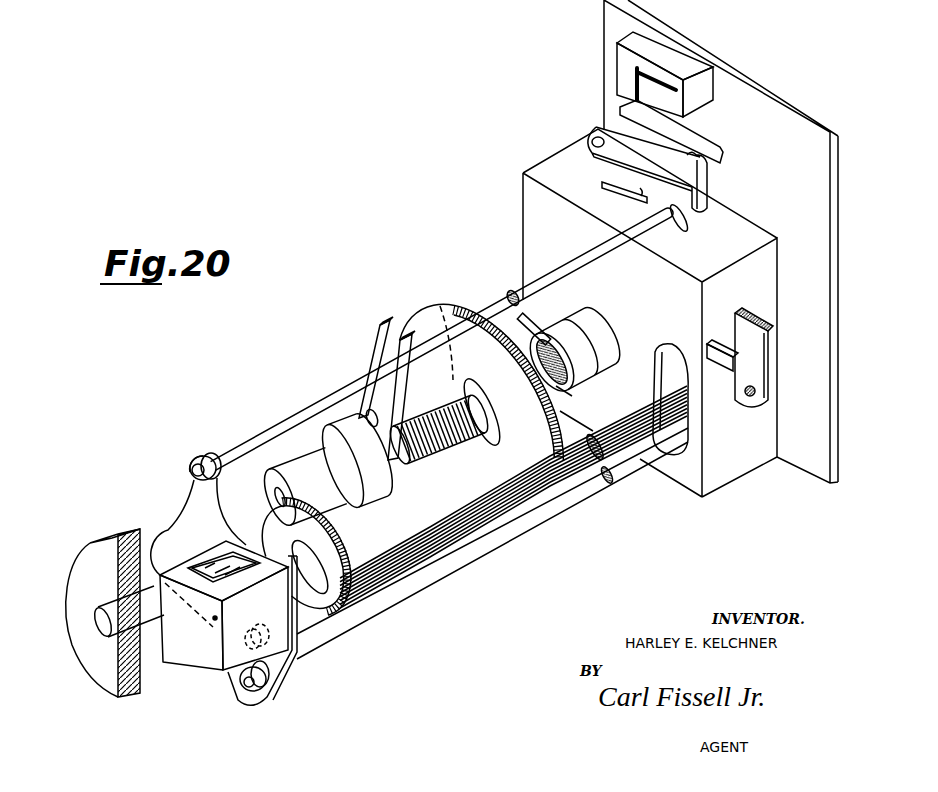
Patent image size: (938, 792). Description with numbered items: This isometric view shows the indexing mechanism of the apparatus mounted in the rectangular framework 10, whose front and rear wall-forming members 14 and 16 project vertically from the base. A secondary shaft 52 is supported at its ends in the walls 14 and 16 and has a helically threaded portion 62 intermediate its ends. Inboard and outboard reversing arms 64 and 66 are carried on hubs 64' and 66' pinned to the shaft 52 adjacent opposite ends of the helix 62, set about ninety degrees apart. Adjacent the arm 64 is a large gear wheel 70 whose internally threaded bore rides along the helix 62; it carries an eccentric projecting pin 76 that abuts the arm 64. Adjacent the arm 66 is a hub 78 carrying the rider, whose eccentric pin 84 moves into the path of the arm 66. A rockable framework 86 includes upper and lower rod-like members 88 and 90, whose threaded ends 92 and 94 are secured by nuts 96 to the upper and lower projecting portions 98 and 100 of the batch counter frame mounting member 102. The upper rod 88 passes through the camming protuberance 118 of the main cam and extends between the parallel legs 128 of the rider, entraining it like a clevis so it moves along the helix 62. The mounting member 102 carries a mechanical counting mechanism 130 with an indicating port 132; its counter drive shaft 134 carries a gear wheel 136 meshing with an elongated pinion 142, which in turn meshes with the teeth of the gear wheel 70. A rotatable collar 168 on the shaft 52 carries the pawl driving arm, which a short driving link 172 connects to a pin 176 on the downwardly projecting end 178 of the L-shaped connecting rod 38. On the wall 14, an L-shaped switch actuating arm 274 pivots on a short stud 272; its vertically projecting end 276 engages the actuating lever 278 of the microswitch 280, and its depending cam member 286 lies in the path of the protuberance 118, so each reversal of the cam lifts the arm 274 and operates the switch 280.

The rectangular framework 10 is at (498, 219).
The front wall-forming member 14 is at (790, 100).
The rear wall-forming member 16 is at (92, 542).
The L-shaped connecting rod 38 is at (758, 318).
The secondary shaft 52 is at (102, 629).
The helically threaded portion 62 is at (446, 447).
The inboard reversing arm 64 is at (551, 312).
The hub 64' is at (586, 399).
The outboard reversing arm 66 is at (302, 453).
The hub 66' is at (345, 486).
The large gear wheel 70 is at (468, 302).
The eccentric projecting pin 76 is at (441, 306).
The hub 78 is at (389, 498).
The eccentric pin 84 is at (372, 418).
The rockable framework 86 is at (182, 456).
The upper rod-like member 88 is at (268, 432).
The lower rod-like member 90 is at (563, 505).
The right-hand threaded end 92 is at (193, 474).
The right-hand threaded end 94 is at (246, 684).
The nuts 96 is at (205, 460).
The upper projecting portion 98 is at (213, 457).
The lower projecting portion 100 is at (276, 698).
The batch counter frame mounting member 102 is at (163, 534).
The camming protuberance 118 is at (687, 221).
The parallel legs 128 is at (403, 343).
The mechanical counting mechanism 130 is at (190, 644).
The indicating port 132 is at (210, 556).
The counter drive shaft 134 is at (307, 578).
The gear wheel 136 is at (334, 583).
The elongated pinion 142 is at (462, 548).
The rotatable collar 168 is at (609, 337).
The short driving link 172 is at (722, 372).
The pin 176 is at (755, 392).
The downwardly projecting end 178 is at (769, 352).
The short stud 272 is at (622, 118).
The L-shaped switch actuating arm 274 is at (706, 188).
The vertically projecting end 276 is at (701, 163).
The actuating lever 278 is at (708, 137).
The microswitch 280 is at (674, 56).
The cam member 286 is at (643, 188).